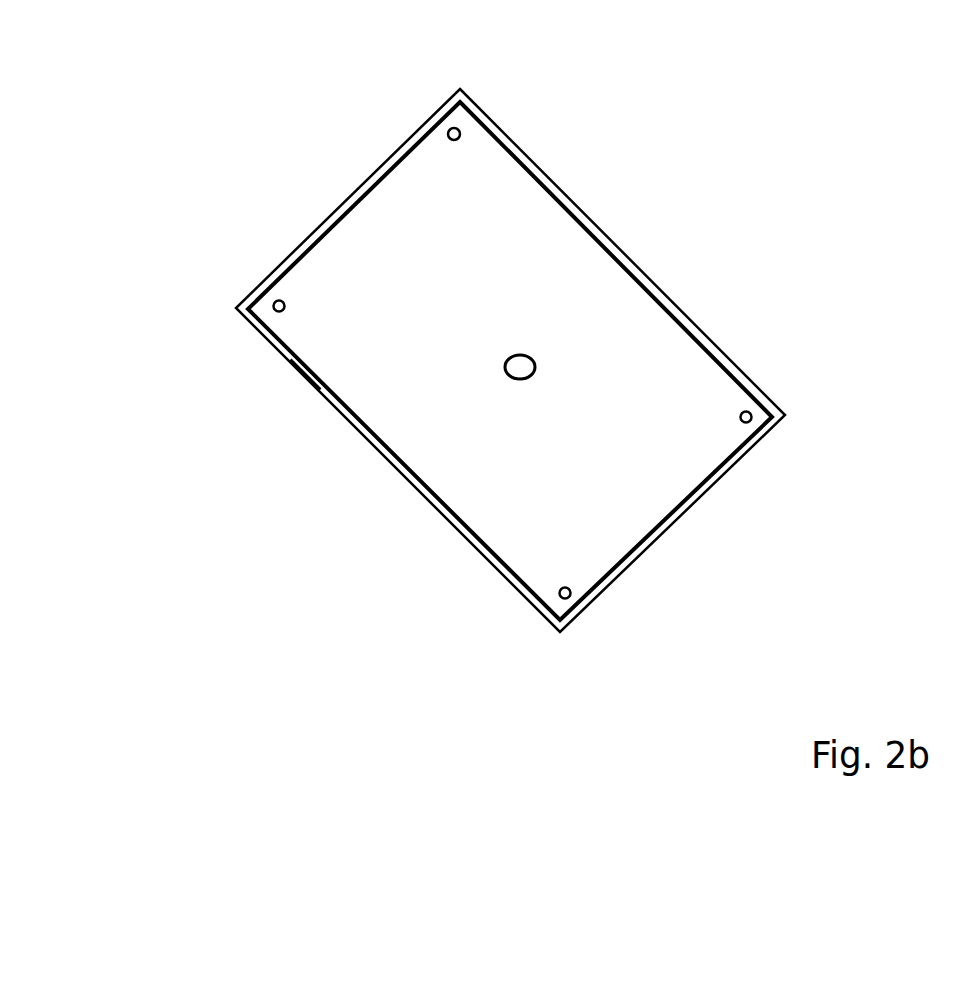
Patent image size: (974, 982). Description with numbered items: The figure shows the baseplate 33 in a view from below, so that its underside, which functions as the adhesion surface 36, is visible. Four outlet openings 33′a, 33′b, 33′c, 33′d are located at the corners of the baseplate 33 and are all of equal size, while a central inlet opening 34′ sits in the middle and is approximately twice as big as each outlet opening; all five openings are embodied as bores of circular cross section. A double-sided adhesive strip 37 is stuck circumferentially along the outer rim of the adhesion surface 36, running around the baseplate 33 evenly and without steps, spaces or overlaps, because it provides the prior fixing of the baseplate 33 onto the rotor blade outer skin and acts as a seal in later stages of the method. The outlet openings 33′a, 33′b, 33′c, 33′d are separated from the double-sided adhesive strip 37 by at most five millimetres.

The baseplate 33 is at (627, 357).
The double-sided adhesive strip 37 is at (367, 190).
The adhesion surface 36 is at (343, 352).
The central inlet opening 34′ is at (507, 368).
The outlet opening 33′a is at (565, 593).
The outlet opening 33′b is at (277, 303).
The outlet opening 33′c is at (452, 132).
The outlet opening 33′d is at (746, 417).